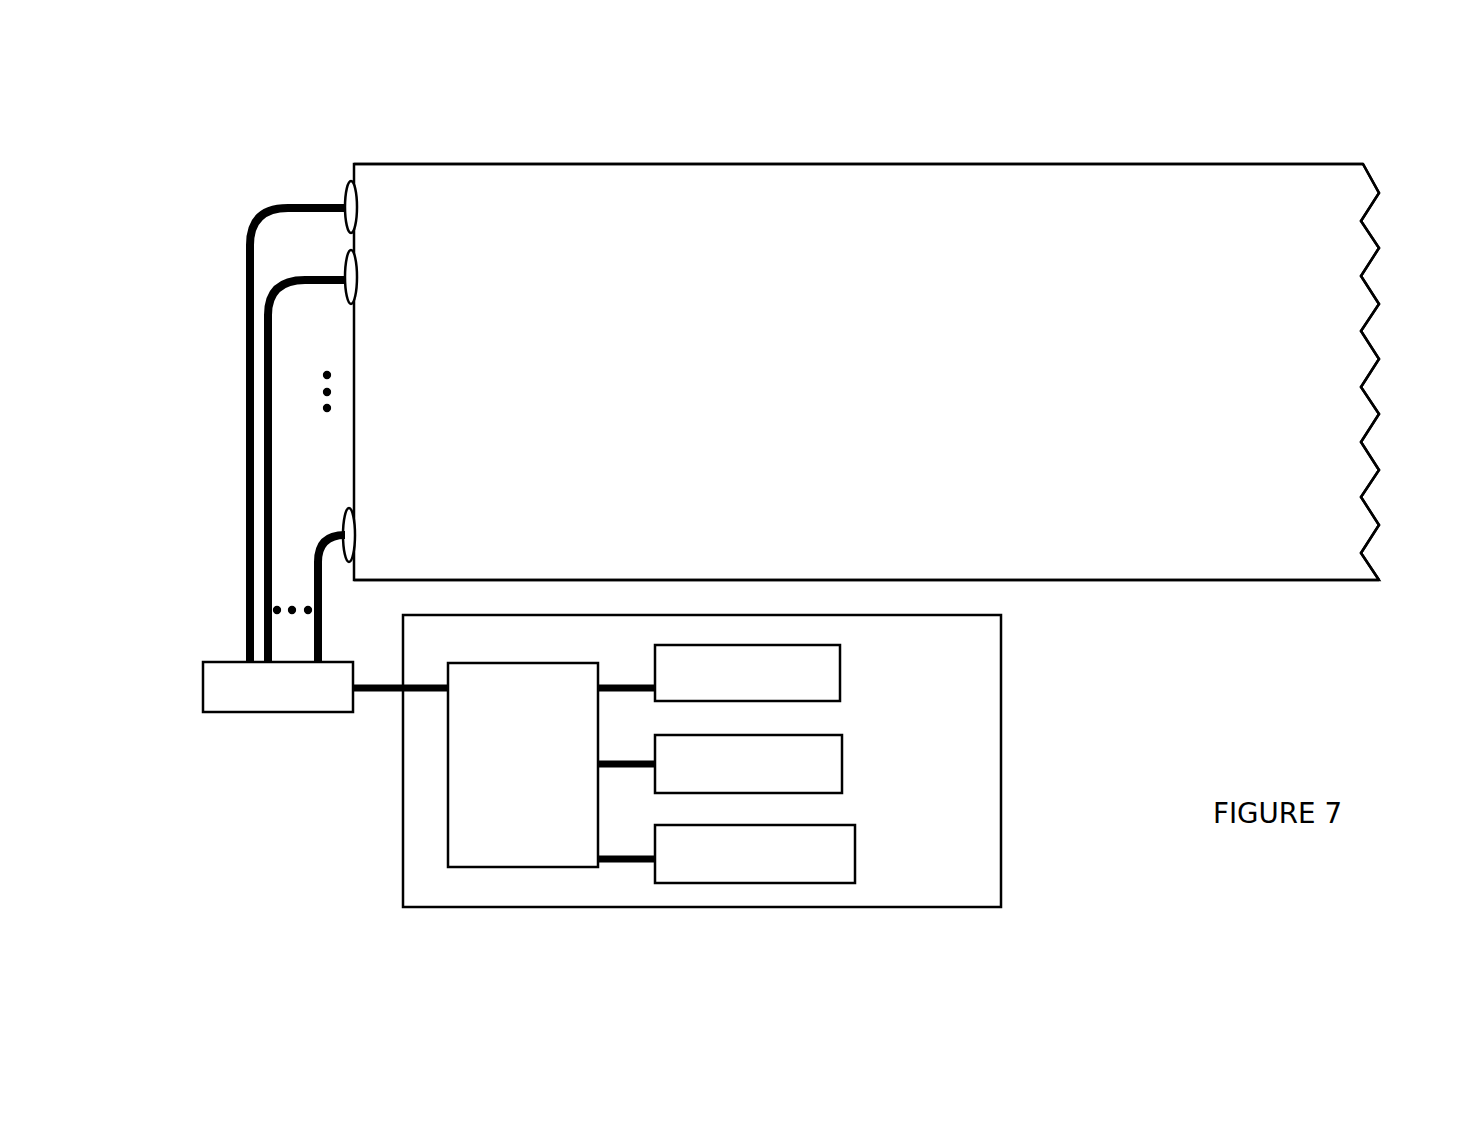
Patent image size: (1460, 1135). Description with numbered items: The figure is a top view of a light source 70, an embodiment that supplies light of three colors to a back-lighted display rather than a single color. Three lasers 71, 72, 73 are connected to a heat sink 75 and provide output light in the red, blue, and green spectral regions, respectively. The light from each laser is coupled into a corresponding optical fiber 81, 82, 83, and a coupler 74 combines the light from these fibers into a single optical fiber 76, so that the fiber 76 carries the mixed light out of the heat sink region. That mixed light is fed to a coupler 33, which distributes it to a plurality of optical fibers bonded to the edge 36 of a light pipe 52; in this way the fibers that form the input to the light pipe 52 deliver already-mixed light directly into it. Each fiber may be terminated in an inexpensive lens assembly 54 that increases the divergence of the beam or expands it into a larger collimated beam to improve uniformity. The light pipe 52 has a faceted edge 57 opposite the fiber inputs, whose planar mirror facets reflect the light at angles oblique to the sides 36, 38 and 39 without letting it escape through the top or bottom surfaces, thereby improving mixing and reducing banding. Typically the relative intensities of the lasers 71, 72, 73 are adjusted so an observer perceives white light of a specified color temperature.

The light source 70 is at (192, 132).
The light pipe 52 is at (1203, 496).
The side of light pipe 39 is at (1069, 166).
The side of light pipe 38 is at (1058, 582).
The faceted edge 57 is at (1371, 421).
The lens assembly 54 is at (360, 210).
The edge of light pipe 36 is at (357, 368).
The coupler 33 is at (203, 692).
The single optical fiber 76 is at (388, 692).
The heat sink 75 is at (999, 777).
The coupler 74 is at (448, 823).
The optical fiber 81 is at (633, 686).
The optical fiber 82 is at (633, 762).
The optical fiber 83 is at (633, 857).
The laser 71 is at (843, 658).
The laser 72 is at (843, 750).
The laser 73 is at (857, 845).